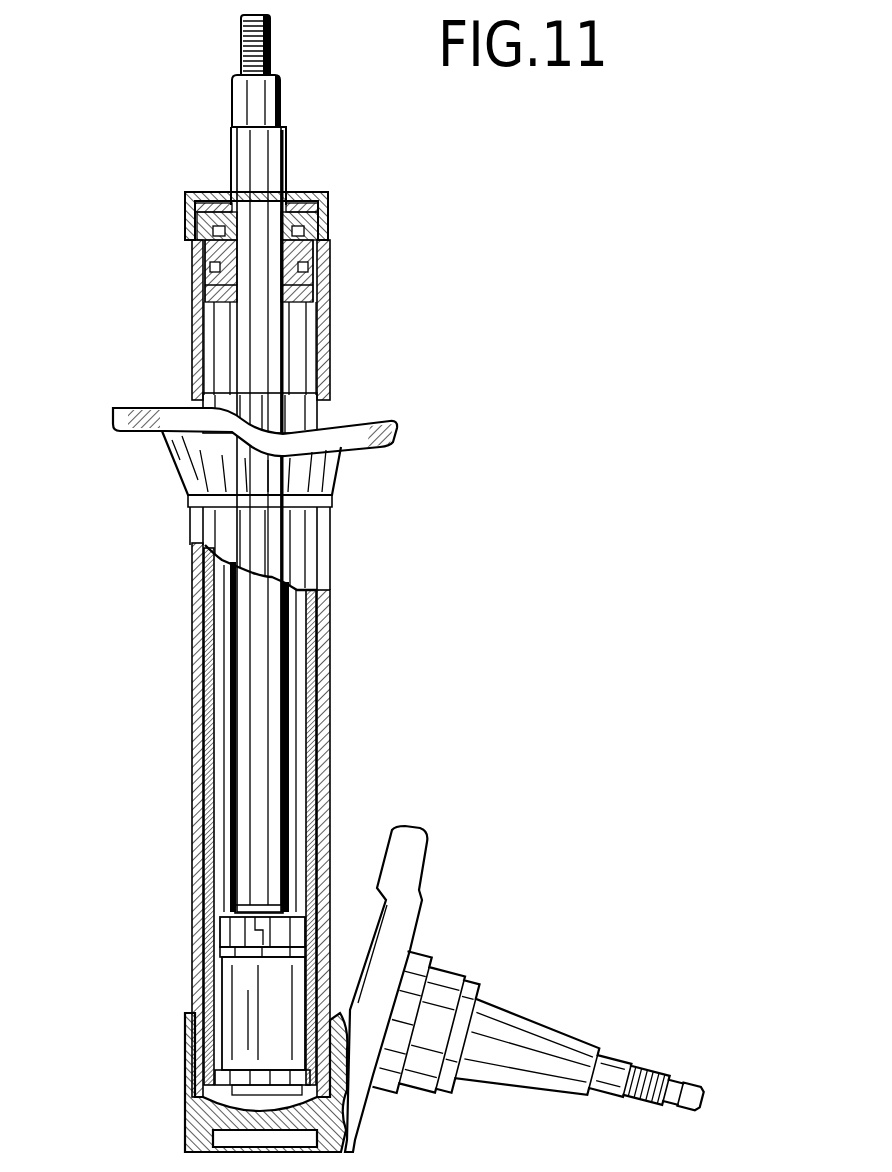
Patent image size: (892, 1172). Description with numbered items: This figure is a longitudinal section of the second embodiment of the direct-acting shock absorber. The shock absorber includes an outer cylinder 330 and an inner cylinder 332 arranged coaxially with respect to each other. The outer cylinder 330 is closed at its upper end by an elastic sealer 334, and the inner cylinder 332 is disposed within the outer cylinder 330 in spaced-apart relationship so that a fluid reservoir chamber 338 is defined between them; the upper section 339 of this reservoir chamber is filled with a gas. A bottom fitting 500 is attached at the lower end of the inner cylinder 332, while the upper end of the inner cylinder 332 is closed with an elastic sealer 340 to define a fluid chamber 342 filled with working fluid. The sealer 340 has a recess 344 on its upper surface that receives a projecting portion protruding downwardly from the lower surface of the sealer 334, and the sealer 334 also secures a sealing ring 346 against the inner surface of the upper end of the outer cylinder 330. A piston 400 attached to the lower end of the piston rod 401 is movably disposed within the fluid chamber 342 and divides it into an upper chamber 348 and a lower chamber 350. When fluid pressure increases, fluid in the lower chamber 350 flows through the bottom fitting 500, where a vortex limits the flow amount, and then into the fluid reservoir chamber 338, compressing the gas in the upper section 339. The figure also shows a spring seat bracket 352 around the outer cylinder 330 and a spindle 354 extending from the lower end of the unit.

The outer cylinder 330 is at (328, 650).
The inner cylinder 332 is at (206, 663).
The elastic sealer 334 is at (328, 210).
The fluid reservoir chamber 338 is at (208, 792).
The upper section of the fluid reservoir chamber 339 is at (196, 366).
The elastic sealer 340 is at (320, 262).
The fluid chamber 342 is at (297, 792).
The recess 344 is at (197, 260).
The sealing ring 346 is at (201, 200).
The upper chamber 348 is at (297, 710).
The lower chamber 350 is at (230, 1012).
The spring seat bracket 352 is at (388, 420).
The spindle 354 is at (530, 1040).
The piston 400 is at (232, 930).
The piston rod 401 is at (268, 605).
The bottom fitting 500 is at (223, 1093).